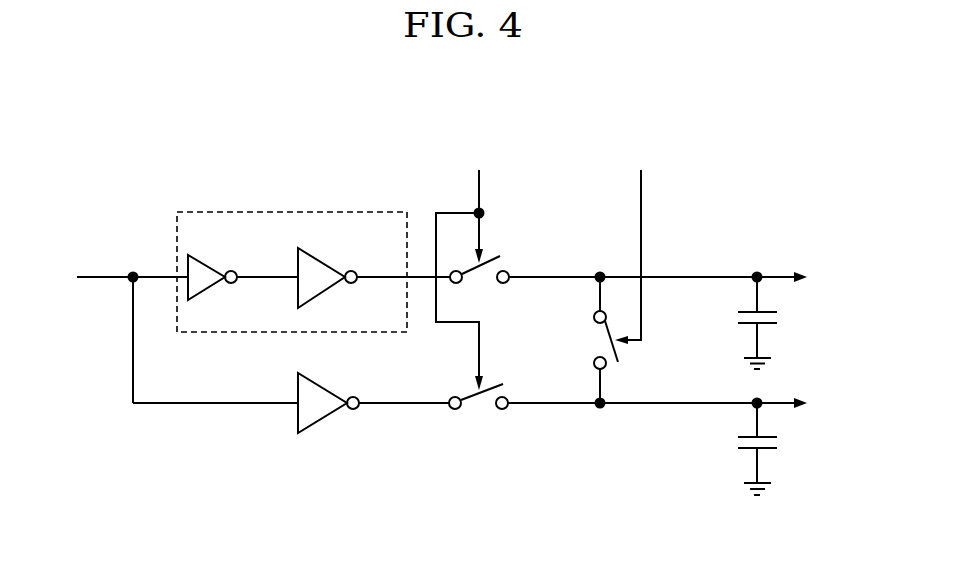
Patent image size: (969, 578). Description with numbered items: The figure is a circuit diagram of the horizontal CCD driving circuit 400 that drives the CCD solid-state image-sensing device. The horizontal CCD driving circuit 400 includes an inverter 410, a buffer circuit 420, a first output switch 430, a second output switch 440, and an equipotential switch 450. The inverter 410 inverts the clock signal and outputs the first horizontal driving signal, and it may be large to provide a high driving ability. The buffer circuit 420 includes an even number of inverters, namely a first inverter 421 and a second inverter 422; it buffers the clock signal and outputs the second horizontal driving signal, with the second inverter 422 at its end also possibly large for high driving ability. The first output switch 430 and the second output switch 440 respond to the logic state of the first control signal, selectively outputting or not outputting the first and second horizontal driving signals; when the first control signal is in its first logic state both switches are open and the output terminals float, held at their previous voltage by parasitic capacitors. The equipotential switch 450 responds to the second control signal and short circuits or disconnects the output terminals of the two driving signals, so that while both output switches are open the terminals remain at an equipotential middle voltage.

The horizontal CCD driving circuit 400 is at (748, 137).
The inverter 410 is at (327, 387).
The buffer circuit 420 is at (293, 210).
The first inverter 421 is at (205, 265).
The second inverter 422 is at (325, 262).
The first output switch 430 is at (502, 380).
The second output switch 440 is at (502, 255).
The equipotential switch 450 is at (627, 365).